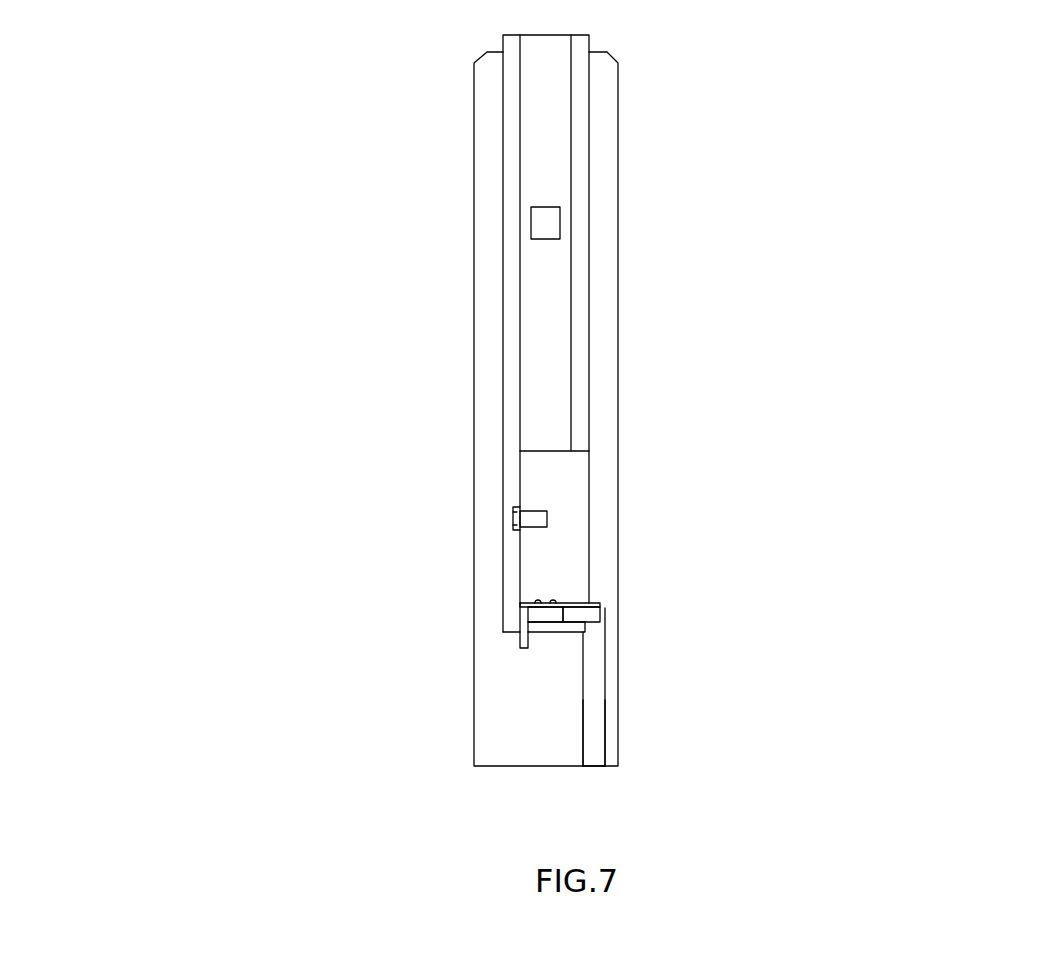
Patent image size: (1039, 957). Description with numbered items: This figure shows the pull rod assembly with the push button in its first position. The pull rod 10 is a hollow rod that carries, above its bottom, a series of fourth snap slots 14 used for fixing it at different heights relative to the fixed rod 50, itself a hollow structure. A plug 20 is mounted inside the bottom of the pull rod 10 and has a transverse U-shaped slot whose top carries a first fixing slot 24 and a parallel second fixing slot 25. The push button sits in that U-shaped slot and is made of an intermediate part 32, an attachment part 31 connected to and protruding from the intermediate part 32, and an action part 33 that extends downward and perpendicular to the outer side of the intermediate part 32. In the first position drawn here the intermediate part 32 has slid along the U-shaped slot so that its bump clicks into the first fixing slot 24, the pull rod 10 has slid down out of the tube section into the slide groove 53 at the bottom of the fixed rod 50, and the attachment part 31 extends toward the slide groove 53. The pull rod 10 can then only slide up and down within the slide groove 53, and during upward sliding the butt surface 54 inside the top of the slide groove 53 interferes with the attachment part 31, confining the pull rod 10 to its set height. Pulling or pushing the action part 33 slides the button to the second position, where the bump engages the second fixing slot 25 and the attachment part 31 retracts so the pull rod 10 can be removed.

The pull rod 10 is at (546, 94).
The fourth snap slot 14 is at (546, 223).
The plug 20 is at (553, 547).
The first fixing slot 24 is at (555, 600).
The second fixing slot 25 is at (540, 601).
The attachment part 31 is at (600, 612).
The intermediate part 32 is at (552, 615).
The action part 33 is at (523, 640).
The fixed rod 50 is at (607, 94).
The slide groove 53 is at (598, 713).
The butt surface 54 is at (602, 605).